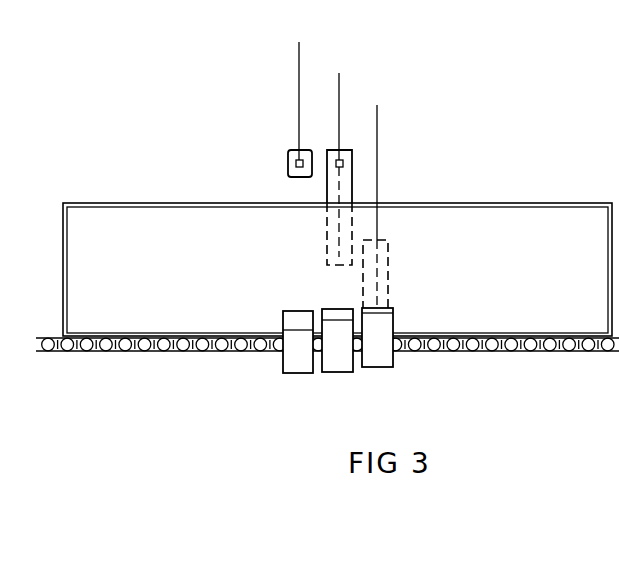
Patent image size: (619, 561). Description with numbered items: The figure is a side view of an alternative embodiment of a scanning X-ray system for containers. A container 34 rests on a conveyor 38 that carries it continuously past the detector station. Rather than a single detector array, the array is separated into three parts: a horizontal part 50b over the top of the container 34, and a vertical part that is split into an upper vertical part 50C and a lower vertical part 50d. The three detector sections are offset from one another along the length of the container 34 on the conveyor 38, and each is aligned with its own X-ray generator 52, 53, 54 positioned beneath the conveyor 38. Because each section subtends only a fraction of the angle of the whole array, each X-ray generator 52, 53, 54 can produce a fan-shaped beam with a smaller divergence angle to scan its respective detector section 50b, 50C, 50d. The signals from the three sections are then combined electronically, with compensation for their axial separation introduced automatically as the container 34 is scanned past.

The container 34 is at (132, 248).
The conveyor 38 is at (142, 350).
The horizontal part of detector array 50b is at (288, 158).
The upper vertical part of detector array 50C is at (338, 227).
The lower vertical part of detector array 50d is at (378, 282).
The X-ray generator 52 is at (292, 362).
The X-ray generator 53 is at (333, 360).
The X-ray generator 54 is at (382, 352).